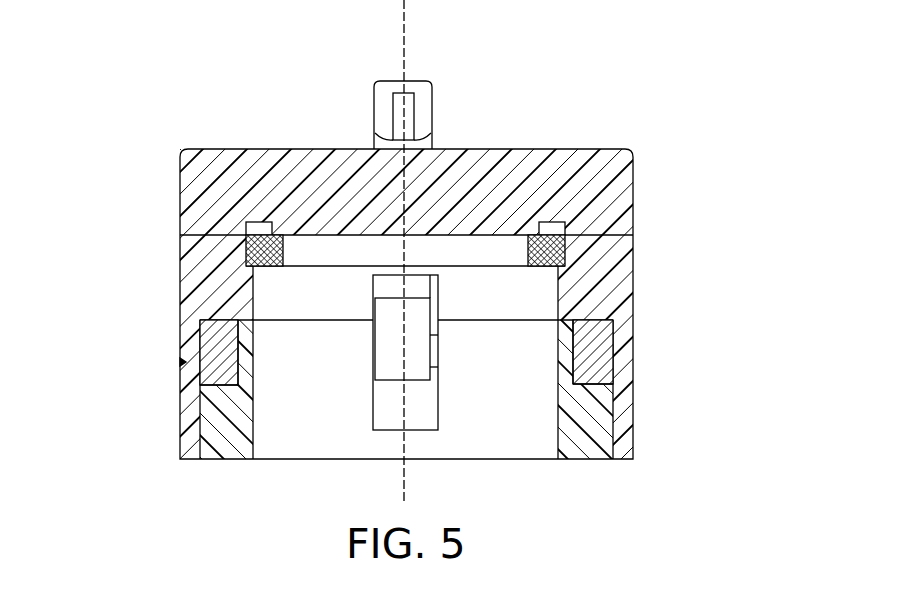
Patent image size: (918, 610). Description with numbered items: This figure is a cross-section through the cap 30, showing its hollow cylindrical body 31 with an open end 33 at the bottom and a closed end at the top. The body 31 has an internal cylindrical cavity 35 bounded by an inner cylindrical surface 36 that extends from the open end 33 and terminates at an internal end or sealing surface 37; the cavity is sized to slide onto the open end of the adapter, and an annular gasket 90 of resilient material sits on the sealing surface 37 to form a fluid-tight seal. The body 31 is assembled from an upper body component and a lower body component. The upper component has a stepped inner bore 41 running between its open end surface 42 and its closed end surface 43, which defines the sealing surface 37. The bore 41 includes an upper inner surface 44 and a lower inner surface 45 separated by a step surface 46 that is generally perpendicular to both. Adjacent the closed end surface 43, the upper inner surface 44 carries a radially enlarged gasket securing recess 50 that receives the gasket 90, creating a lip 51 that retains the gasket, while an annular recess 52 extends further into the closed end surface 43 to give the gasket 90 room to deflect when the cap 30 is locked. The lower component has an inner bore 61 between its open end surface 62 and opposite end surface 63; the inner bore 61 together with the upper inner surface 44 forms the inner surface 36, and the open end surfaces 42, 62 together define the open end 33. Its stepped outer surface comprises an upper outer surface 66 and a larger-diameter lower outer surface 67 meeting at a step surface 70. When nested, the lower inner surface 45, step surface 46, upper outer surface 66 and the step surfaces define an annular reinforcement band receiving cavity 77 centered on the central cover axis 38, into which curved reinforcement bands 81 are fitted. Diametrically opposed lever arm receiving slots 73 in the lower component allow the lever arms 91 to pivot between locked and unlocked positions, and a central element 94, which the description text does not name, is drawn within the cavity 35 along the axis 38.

The cap 30 is at (137, 106).
The hollow cylindrical body 31 is at (222, 148).
The open end 33 is at (251, 461).
The internal cylindrical bore or cavity 35 is at (318, 476).
The inner cylindrical surface 36 is at (253, 339).
The internal end or sealing surface 37 is at (303, 236).
The central cover axis 38 is at (405, 480).
The stepped or countersunk inner bore 41 is at (253, 288).
The open end surface 42 is at (200, 461).
The closed end surface 43 is at (303, 238).
The upper generally cylindrical inner surface 44 is at (253, 269).
The lower generally cylindrical inner surface 45 is at (190, 447).
The ledge or step surface 46 is at (197, 338).
The gasket securing recess 50 is at (246, 258).
The lip 51 is at (283, 247).
The annular recess 52 is at (244, 224).
The inner bore 61 is at (253, 395).
The open end surface 62 is at (225, 461).
The opposite end surface 63 is at (253, 307).
The upper generally cylindrical outer surface 66 is at (253, 368).
The lower generally cylindrical outer surface 67 is at (253, 413).
The ledge or step surface 70 is at (200, 387).
The lever arm receiving slot 73 is at (416, 402).
The reinforcement band receiving cavity 77 is at (180, 362).
The reinforcement band 81 is at (212, 352).
The annular gasket or sealing member 90 is at (545, 268).
The lever arm 91 is at (427, 107).
The plunger 94 is at (415, 352).